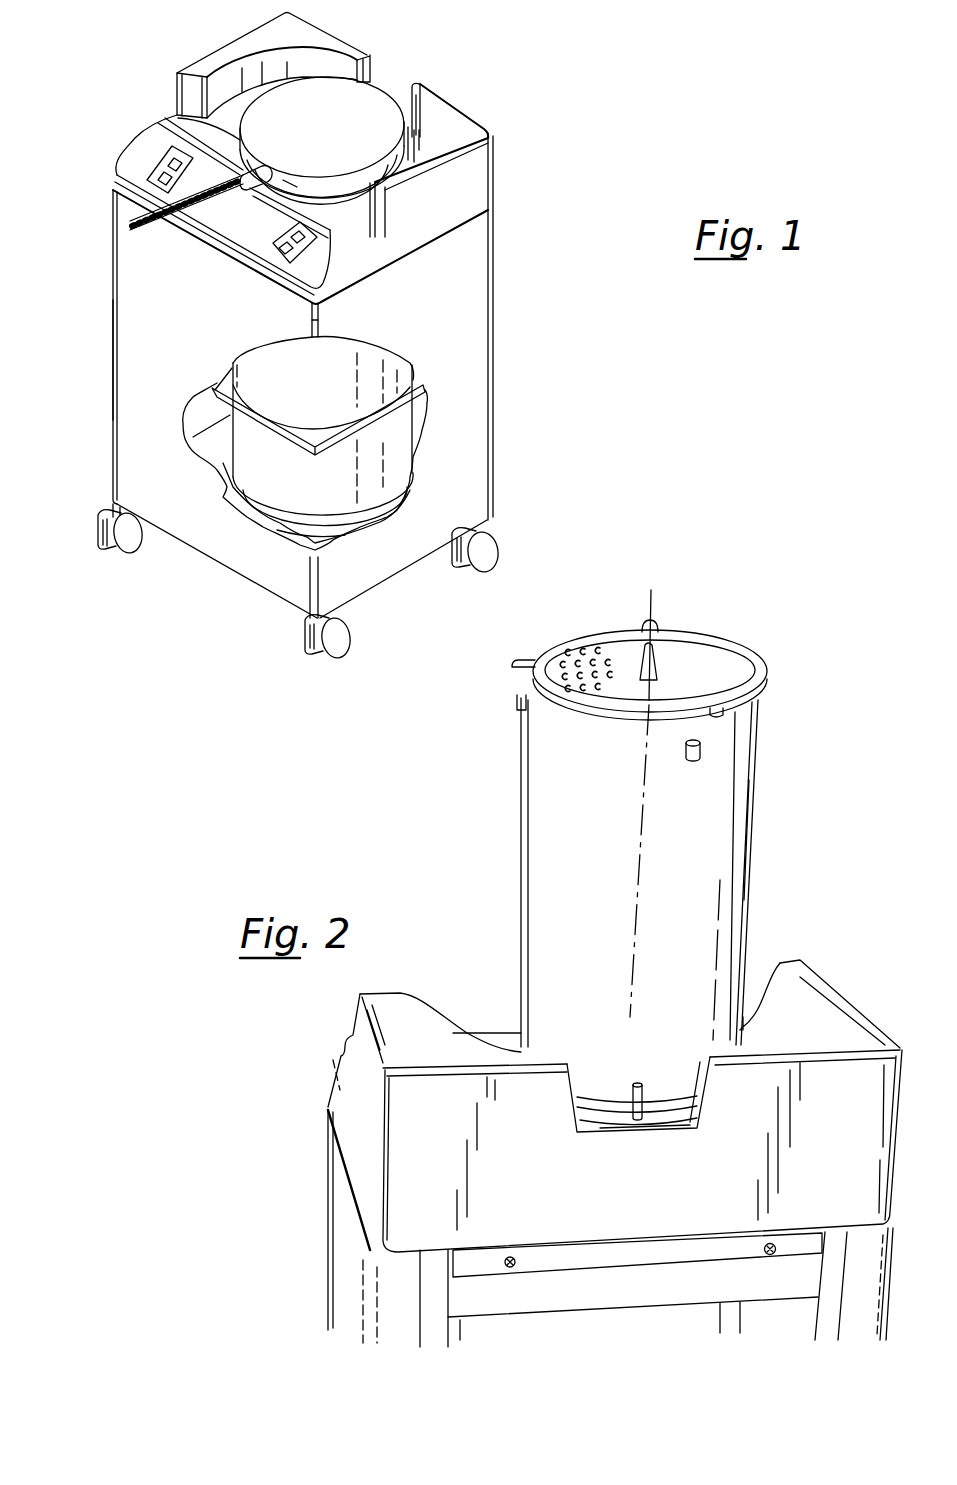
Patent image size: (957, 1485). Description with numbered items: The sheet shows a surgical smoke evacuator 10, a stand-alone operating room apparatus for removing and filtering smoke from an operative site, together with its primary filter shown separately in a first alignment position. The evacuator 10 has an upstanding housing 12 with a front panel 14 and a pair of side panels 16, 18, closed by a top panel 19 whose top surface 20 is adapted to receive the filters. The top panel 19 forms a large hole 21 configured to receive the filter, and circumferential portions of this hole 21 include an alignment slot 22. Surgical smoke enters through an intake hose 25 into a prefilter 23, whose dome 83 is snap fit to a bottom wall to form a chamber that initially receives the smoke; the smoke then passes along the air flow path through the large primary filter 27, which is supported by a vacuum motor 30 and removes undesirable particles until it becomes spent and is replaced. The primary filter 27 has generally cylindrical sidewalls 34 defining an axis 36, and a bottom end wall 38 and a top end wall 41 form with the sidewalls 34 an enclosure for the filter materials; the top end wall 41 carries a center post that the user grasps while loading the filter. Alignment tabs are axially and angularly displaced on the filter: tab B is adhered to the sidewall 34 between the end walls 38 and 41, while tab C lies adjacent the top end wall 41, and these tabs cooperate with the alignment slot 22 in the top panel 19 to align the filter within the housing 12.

In FIG. 1, the surgical smoke evacuator 10 is at (553, 187).
In FIG. 1, the housing 12 is at (343, 268).
In FIG. 1, the front panel 14 is at (147, 158).
In FIG. 2, the front panel 14 is at (642, 1093).
In FIG. 1, the side panel 16 is at (110, 284).
In FIG. 1, the side panel 18 is at (323, 319).
In FIG. 1, the top panel 19 is at (173, 118).
In FIG. 2, the top panel 19 is at (500, 1033).
In FIG. 1, the top surface 20 is at (357, 230).
In FIG. 2, the large hole 21 is at (747, 1033).
In FIG. 1, the alignment slot 22 is at (170, 140).
In FIG. 2, the alignment slot 22 is at (640, 1127).
In FIG. 1, the prefilter 23 is at (382, 87).
In FIG. 1, the intake hose 25 is at (297, 180).
In FIG. 1, the primary filter 27 is at (370, 381).
In FIG. 2, the primary filter 27 is at (506, 798).
In FIG. 1, the vacuum motor 30 is at (370, 470).
In FIG. 2, the cylindrical sidewalls 34 is at (742, 818).
In FIG. 2, the axis 36 is at (652, 597).
In FIG. 2, the bottom end wall 38 is at (597, 1107).
In FIG. 2, the top end wall 41 is at (727, 670).
In FIG. 1, the dome 83 is at (297, 180).
In FIG. 2, the alignment tab B is at (700, 752).
In FIG. 2, the alignment tab C is at (723, 711).